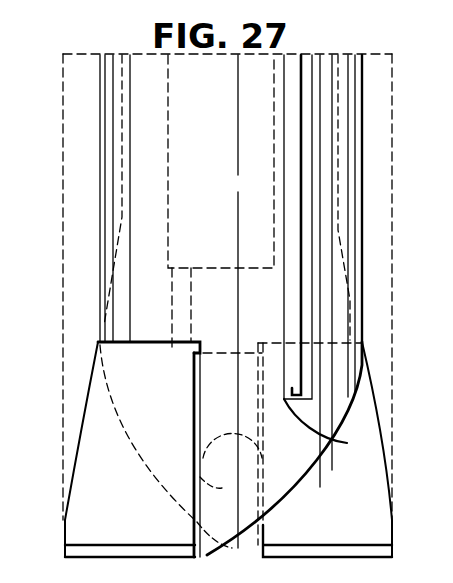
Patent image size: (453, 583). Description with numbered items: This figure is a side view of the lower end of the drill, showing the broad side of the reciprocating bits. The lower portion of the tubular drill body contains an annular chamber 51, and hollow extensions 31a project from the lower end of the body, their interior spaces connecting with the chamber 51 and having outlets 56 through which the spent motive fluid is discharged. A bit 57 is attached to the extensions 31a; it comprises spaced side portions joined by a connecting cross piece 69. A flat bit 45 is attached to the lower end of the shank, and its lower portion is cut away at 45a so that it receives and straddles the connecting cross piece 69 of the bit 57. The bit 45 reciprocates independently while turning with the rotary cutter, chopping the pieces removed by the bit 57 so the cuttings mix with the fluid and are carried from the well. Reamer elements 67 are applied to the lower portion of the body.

The annular chamber 51 is at (178, 78).
The extensions 31a is at (330, 60).
The outlets 56 is at (173, 346).
The cut-away portion 45a is at (194, 396).
The flat bit 45 is at (74, 522).
The reamer elements 67 is at (329, 432).
The connecting cross piece 69 is at (199, 476).
The bit 57 is at (249, 566).